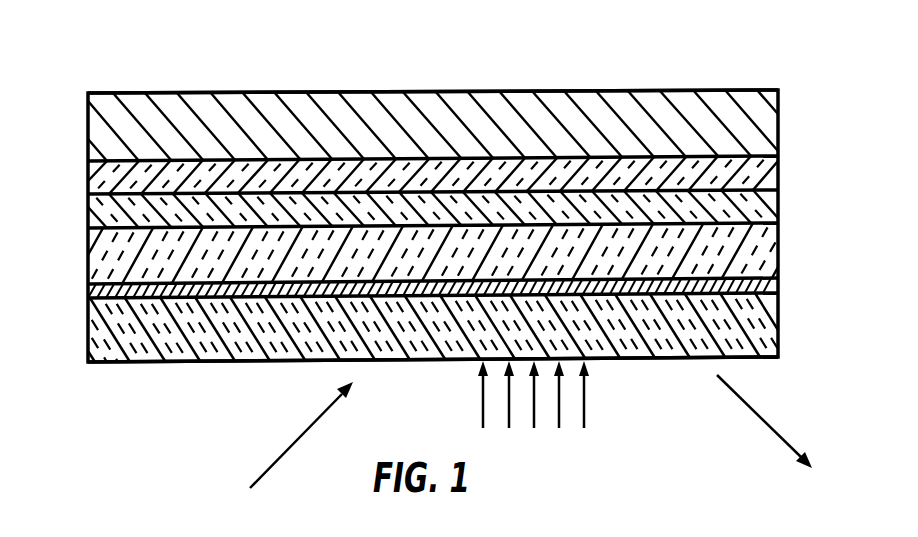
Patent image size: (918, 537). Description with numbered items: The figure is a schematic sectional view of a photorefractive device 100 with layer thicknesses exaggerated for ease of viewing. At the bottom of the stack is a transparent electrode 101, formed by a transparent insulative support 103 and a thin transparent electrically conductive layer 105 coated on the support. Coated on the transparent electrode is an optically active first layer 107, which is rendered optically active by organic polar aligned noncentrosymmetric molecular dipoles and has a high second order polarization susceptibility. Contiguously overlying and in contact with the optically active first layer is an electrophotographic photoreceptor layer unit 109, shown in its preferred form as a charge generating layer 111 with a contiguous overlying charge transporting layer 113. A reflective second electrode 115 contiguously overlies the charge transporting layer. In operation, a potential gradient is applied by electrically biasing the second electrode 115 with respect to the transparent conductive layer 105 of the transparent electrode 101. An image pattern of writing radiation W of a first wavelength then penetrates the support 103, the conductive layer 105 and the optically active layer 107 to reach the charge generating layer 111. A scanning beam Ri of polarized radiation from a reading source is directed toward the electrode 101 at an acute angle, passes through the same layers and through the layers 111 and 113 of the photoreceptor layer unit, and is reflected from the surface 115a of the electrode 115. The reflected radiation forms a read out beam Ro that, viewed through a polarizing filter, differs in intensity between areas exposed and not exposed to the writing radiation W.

The photorefractive device 100 is at (651, 56).
The transparent electrode 101 is at (783, 280).
The transparent insulative support 103 is at (88, 330).
The transparent electrically conductive layer 105 is at (88, 291).
The optically active first layer 107 is at (779, 251).
The electrophotographic photoreceptor layer unit 109 is at (783, 157).
The charge generating layer 111 is at (88, 209).
The charge transporting layer 113 is at (88, 177).
The reflective second electrode 115 is at (778, 118).
The surface of the electrode 115a is at (443, 162).
The writing radiation W is at (585, 403).
The scanning beam Ri is at (272, 470).
The read out beam Ro is at (772, 427).